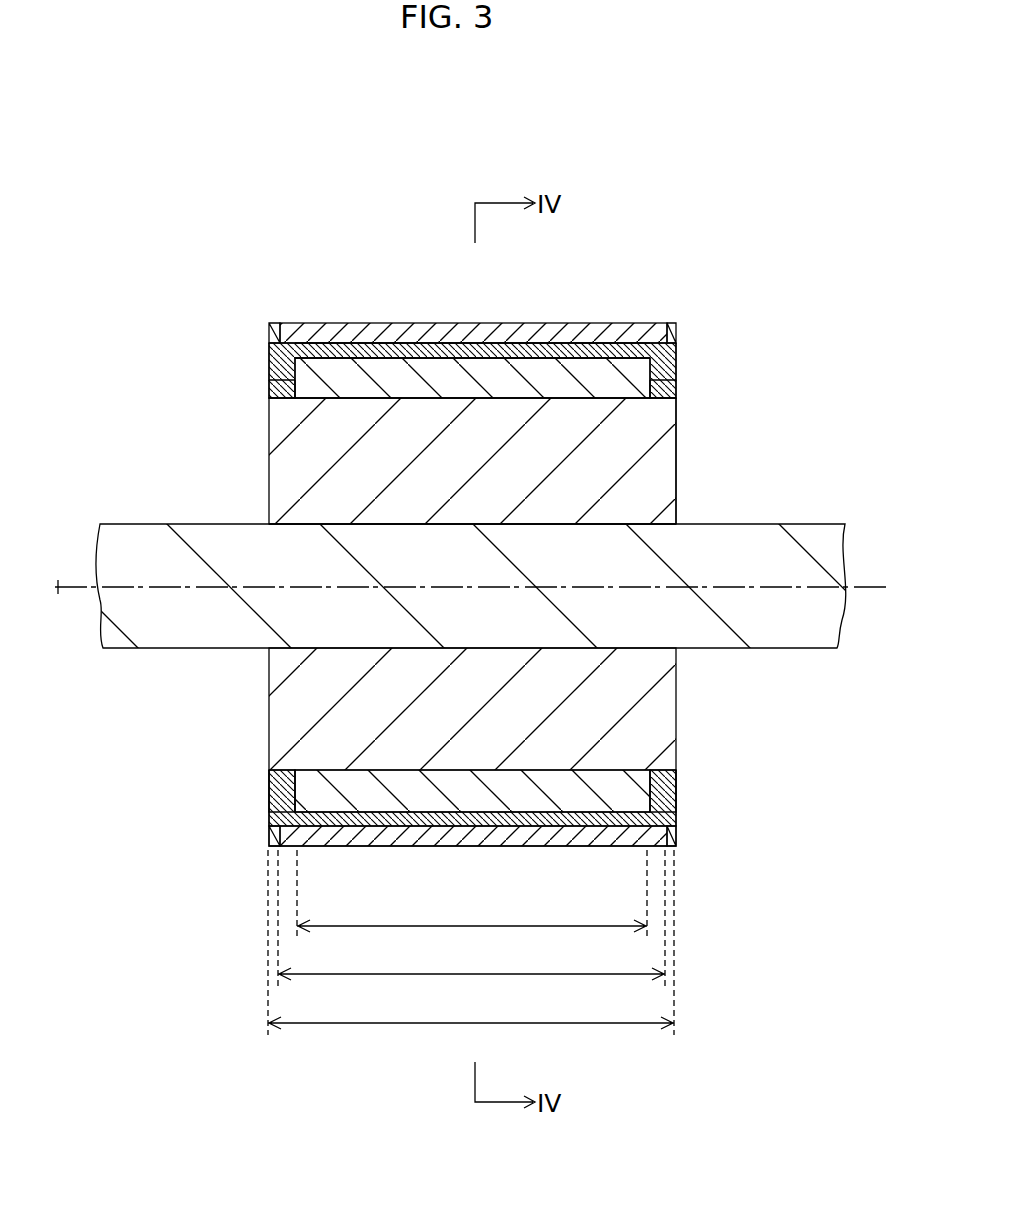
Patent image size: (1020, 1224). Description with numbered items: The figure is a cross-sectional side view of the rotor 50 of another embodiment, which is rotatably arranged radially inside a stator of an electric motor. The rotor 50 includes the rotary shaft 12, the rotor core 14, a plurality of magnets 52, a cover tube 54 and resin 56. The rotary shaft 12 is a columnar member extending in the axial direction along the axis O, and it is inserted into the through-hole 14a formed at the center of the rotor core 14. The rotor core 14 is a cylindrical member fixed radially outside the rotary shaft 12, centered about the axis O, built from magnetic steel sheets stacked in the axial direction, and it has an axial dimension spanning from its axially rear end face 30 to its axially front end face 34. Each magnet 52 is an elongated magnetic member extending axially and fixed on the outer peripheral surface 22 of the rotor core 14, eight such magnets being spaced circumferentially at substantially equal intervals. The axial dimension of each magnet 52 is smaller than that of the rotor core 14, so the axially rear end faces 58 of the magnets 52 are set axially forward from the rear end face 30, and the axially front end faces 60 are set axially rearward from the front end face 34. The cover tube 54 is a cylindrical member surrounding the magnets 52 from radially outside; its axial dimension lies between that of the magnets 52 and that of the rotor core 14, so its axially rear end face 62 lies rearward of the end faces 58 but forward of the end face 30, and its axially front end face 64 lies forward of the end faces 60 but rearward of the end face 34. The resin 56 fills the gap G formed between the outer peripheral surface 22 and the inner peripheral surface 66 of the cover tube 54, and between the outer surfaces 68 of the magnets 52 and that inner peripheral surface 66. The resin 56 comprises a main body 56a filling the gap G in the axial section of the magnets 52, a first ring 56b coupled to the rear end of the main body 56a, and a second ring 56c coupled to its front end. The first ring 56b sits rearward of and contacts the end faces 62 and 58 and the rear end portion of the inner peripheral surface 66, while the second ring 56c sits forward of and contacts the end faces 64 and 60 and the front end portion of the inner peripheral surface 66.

The rotary shaft 12 is at (132, 537).
The rotor core 14 is at (268, 462).
The through-hole 14a is at (556, 524).
The outer peripheral surface 22 is at (553, 398).
The axially rear end face 30 is at (676, 480).
The axially front end face 34 is at (268, 712).
The rotor 50 is at (715, 151).
The magnet 52 is at (378, 368).
The cover tube 54 is at (498, 330).
The resin 56 is at (692, 814).
The main body 56a is at (494, 847).
The first ring 56b is at (676, 347).
The second ring 56c is at (268, 355).
The axially rear end face 58 is at (676, 382).
The axially front end face 60 is at (268, 376).
The axially rear end face 62 is at (672, 325).
The axially front end face 64 is at (268, 330).
The inner peripheral surface 66 is at (423, 343).
The outer surface 68 is at (417, 346).
The gap G is at (323, 350).
The axis O is at (62, 583).